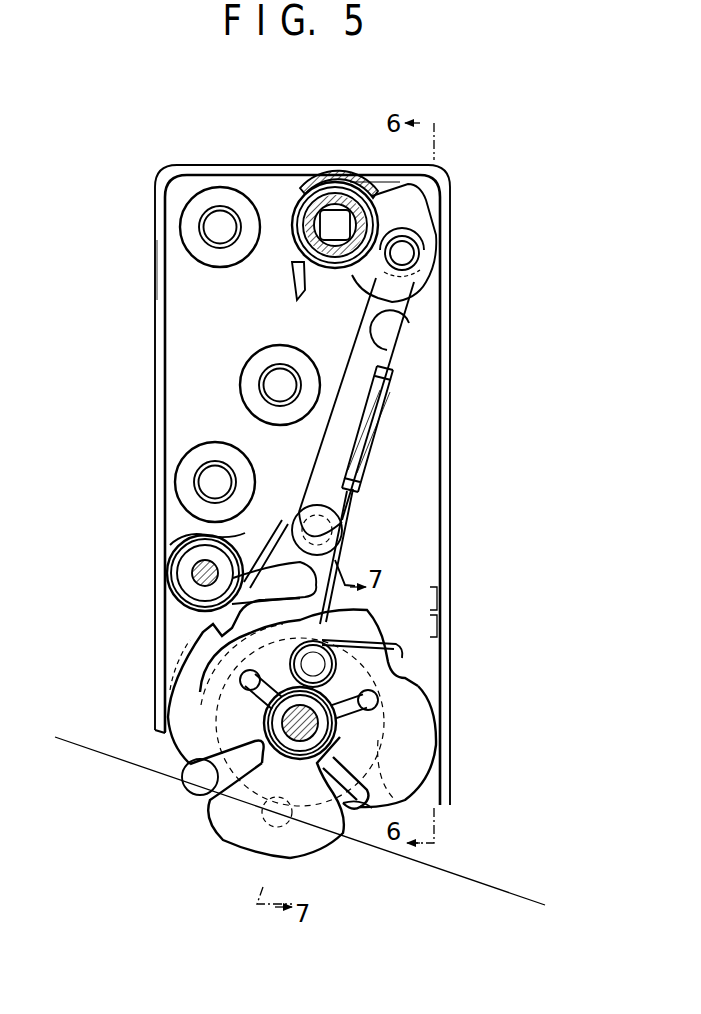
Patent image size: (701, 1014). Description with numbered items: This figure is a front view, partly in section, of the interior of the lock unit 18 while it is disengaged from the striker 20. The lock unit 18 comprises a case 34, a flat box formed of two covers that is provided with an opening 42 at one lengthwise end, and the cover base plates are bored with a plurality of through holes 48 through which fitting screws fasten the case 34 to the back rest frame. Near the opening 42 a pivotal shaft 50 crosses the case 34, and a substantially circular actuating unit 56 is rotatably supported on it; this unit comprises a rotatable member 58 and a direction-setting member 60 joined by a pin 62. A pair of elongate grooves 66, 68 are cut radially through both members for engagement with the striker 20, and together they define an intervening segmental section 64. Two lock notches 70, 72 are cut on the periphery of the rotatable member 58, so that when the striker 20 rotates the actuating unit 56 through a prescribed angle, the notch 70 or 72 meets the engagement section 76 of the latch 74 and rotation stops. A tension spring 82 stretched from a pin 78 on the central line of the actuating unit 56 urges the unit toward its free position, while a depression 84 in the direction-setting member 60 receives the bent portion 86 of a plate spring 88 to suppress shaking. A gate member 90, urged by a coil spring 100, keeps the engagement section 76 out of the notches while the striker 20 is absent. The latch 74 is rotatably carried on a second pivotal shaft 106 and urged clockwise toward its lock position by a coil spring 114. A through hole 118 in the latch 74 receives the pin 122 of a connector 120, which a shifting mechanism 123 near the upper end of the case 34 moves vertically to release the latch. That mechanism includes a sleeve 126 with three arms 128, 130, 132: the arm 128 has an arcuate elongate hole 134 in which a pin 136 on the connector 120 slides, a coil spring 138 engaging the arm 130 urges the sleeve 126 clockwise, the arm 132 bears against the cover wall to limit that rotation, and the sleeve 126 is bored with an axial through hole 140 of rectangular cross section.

The lock unit 18 is at (149, 178).
The striker 20 is at (190, 792).
The case 34 is at (153, 253).
The opening 42 is at (170, 738).
The through holes 48 is at (217, 235).
The pivotal shaft 50 is at (336, 735).
The circular actuating unit 56 is at (408, 770).
The rotatable member 58 is at (418, 725).
The direction-setting member 60 is at (262, 660).
The pin 62 is at (278, 830).
The segmental section 64 is at (313, 843).
The elongate groove 66 is at (230, 808).
The elongate groove 68 is at (346, 804).
The lock notch 70 is at (402, 667).
The lock notch 72 is at (217, 623).
The latch 74 is at (250, 533).
The engagement section 76 is at (352, 572).
The pin 78 is at (397, 653).
The tension spring 82 is at (370, 473).
The depression 84 is at (333, 640).
The bent portion 86 is at (330, 632).
The plate spring 88 is at (383, 639).
The gate member 90 is at (160, 700).
The coil spring 100 is at (283, 705).
The pivotal shaft 106 is at (192, 575).
The coil spring 114 is at (170, 557).
The through hole 118 is at (303, 526).
The connector 120 is at (332, 450).
The pin 122 is at (316, 520).
The shifting mechanism 123 is at (364, 150).
The sleeve 126 is at (372, 208).
The arm 128 is at (436, 238).
The arm 130 is at (294, 286).
The arm 132 is at (289, 186).
The arcuate elongate hole 134 is at (398, 274).
The pin 136 is at (408, 254).
The coil spring 138 is at (386, 222).
The through hole 140 is at (333, 226).